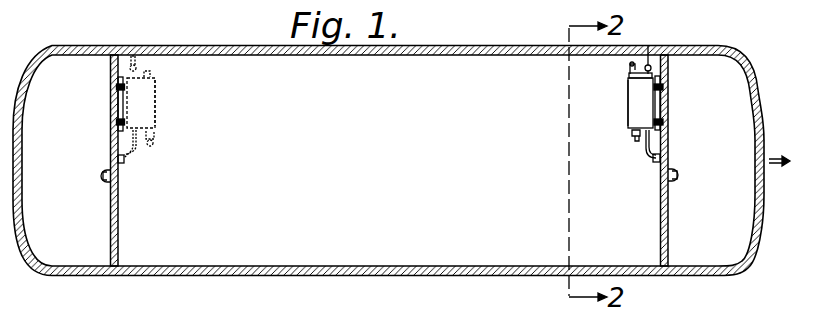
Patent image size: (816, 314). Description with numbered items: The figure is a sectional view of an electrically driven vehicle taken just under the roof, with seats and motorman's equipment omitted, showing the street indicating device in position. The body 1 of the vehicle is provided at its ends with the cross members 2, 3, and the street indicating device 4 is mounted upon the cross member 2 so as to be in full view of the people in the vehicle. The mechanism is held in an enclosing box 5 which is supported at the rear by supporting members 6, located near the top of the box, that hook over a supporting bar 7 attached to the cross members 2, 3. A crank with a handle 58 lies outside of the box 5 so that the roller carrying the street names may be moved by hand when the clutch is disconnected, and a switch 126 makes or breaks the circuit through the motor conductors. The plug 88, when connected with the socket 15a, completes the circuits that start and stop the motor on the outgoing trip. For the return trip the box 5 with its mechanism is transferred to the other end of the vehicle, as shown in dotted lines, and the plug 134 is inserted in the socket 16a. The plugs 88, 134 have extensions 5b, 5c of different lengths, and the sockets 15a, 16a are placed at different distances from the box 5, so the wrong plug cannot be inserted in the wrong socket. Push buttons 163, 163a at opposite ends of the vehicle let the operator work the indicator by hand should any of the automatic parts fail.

The body 1 is at (172, 276).
The cross member 2 is at (668, 223).
The cross member 3 is at (118, 229).
The street indicating device 4 is at (158, 113).
The enclosing box 5 is at (147, 100).
The extension 5b is at (118, 68).
The extension 5c is at (138, 153).
The supporting members 6 is at (118, 87).
The supporting bar 7 is at (118, 104).
The plug socket 15a is at (657, 164).
The plug socket 16a is at (122, 168).
The handle 58 is at (155, 143).
The plug 88 is at (135, 62).
The switch 126 is at (150, 73).
The plug 134 is at (126, 166).
The push button 163 is at (679, 177).
The push button 163a is at (101, 175).